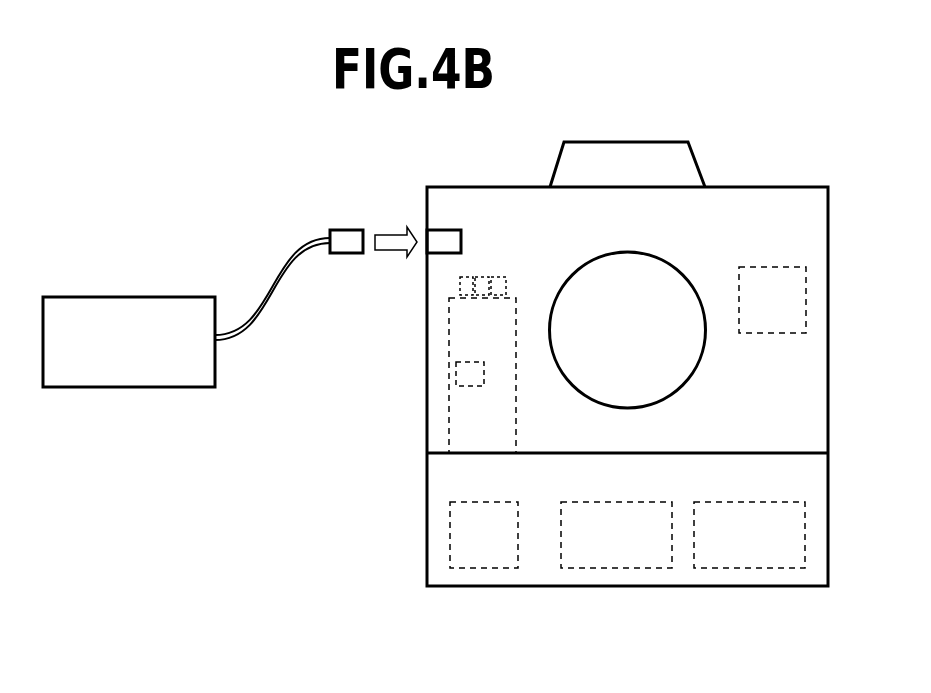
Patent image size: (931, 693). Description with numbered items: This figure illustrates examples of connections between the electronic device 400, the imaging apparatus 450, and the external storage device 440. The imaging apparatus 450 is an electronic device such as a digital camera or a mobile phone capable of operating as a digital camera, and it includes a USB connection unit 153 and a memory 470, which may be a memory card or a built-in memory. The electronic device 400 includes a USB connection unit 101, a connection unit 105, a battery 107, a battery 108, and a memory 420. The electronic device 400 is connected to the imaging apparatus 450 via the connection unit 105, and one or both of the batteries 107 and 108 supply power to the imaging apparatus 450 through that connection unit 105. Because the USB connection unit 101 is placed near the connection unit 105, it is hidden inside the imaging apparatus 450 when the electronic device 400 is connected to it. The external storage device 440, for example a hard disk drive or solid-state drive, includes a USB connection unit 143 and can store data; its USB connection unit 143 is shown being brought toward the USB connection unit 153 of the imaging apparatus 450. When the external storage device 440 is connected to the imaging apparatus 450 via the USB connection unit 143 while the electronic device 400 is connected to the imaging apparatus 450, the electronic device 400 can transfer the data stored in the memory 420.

The electronic device 400 is at (632, 587).
The imaging apparatus 450 is at (762, 187).
The memory 470 is at (763, 267).
The USB connection unit 153 is at (447, 230).
The connection unit 105 is at (483, 277).
The USB connection unit 101 is at (472, 362).
The memory 420 is at (466, 502).
The battery 107 is at (594, 502).
The battery 108 is at (731, 502).
The external storage device 440 is at (124, 297).
The USB connection unit 143 is at (347, 230).